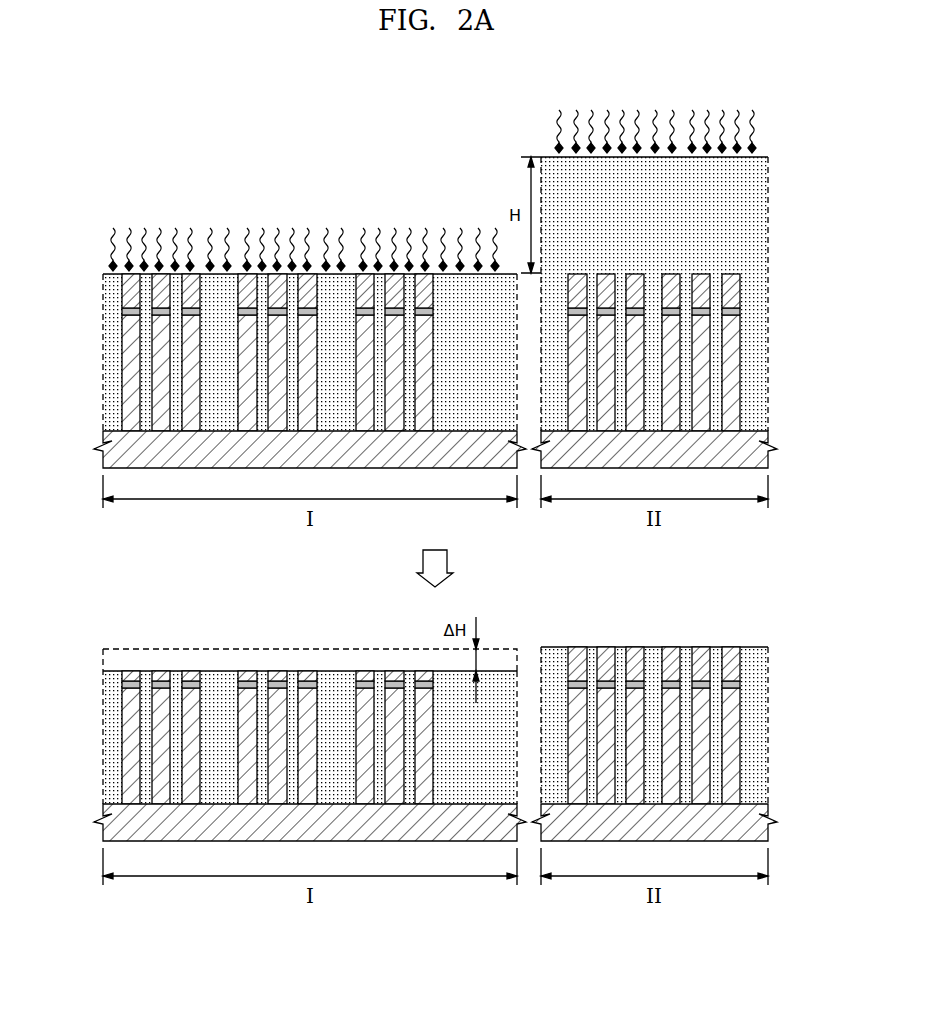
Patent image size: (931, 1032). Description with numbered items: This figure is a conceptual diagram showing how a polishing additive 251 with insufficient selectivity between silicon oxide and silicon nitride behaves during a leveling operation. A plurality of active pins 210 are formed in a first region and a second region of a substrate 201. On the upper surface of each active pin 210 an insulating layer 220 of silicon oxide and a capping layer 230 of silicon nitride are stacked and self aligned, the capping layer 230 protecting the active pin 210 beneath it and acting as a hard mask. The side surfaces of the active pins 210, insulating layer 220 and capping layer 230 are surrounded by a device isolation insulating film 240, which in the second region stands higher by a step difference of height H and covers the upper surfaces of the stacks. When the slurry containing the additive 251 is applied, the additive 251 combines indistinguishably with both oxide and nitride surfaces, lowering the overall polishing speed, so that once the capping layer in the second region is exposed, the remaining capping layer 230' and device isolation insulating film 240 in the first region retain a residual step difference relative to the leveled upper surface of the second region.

The substrate 201 is at (110, 437).
The active pins 210 is at (127, 383).
The insulating layer 220 is at (122, 311).
The capping layer 230 is at (395, 291).
The capping layer 230' is at (393, 664).
The device isolation insulating film 240 is at (110, 345).
The additive 251 is at (110, 253).